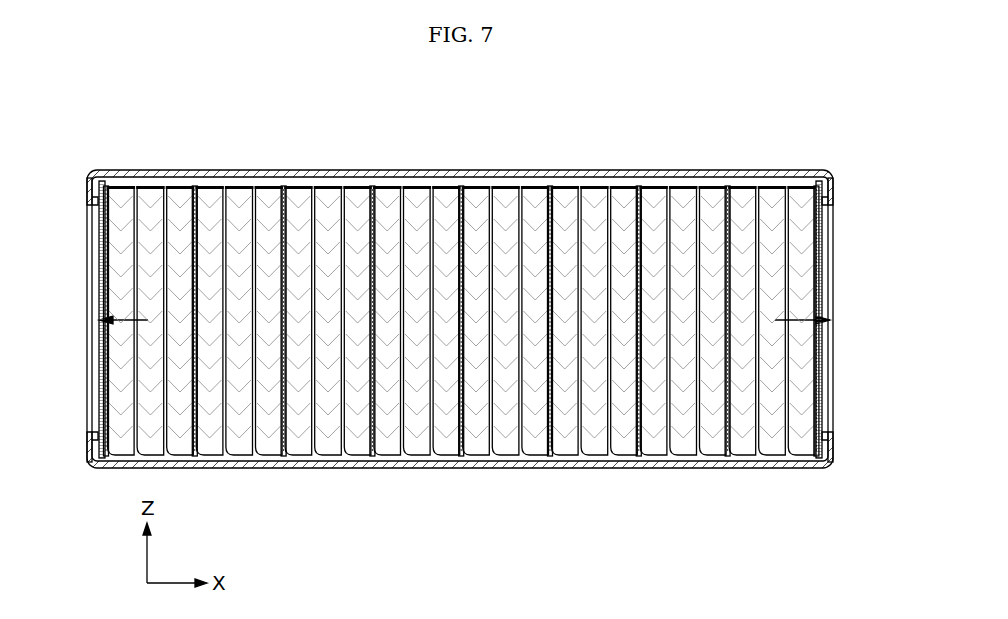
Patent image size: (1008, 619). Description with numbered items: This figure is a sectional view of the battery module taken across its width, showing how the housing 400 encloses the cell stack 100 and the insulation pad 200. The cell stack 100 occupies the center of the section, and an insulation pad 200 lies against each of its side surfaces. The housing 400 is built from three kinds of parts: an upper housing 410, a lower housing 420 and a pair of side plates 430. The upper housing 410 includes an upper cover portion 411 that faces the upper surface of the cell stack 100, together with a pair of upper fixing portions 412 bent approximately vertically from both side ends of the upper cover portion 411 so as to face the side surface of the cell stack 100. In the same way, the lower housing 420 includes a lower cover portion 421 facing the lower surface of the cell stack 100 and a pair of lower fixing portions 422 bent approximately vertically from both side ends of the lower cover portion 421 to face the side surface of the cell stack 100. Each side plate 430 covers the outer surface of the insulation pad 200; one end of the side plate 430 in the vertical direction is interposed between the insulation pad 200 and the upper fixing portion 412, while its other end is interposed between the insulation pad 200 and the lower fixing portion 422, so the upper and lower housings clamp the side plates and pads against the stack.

The housing 400 is at (202, 152).
The upper housing 410 is at (880, 123).
The upper cover portion 411 is at (793, 170).
The upper fixing portion 412 is at (833, 190).
The lower housing 420 is at (880, 518).
The lower cover portion 421 is at (793, 468).
The lower fixing portion 422 is at (835, 450).
The side plate 430 is at (87, 288).
The insulation pad 200 is at (104, 353).
The cell stack 100 is at (651, 185).